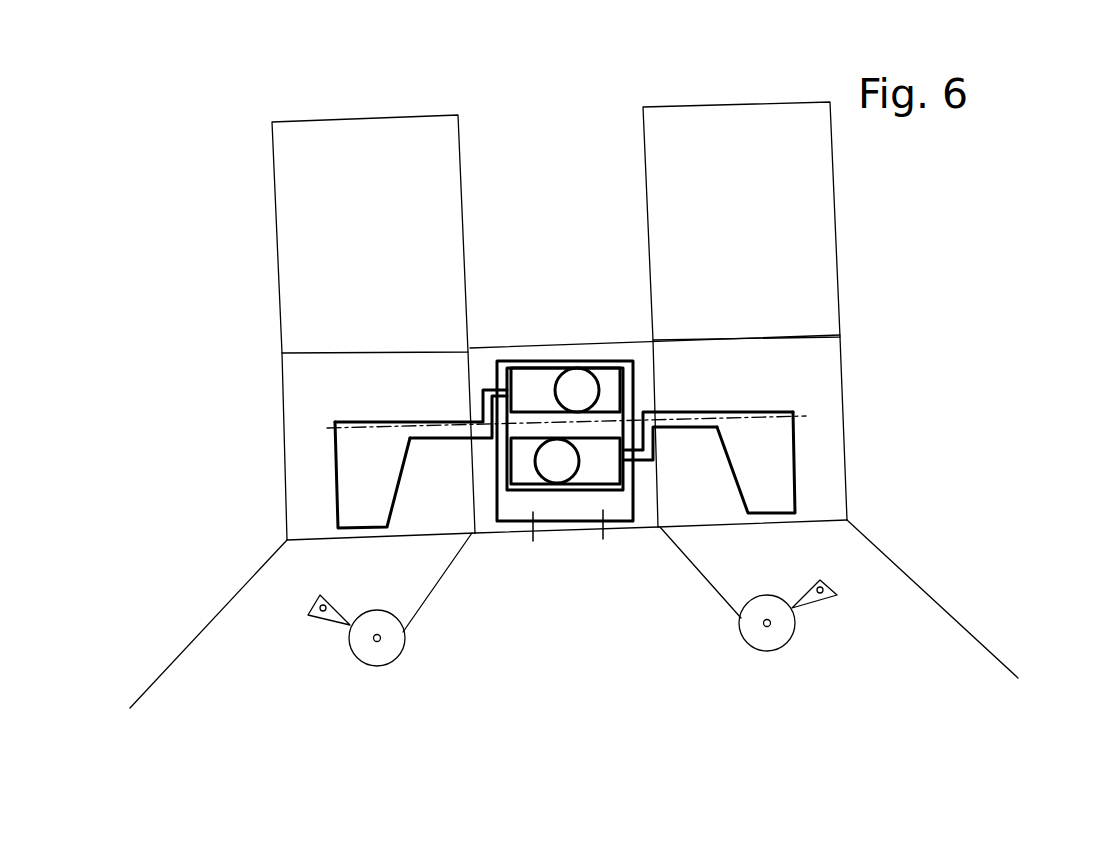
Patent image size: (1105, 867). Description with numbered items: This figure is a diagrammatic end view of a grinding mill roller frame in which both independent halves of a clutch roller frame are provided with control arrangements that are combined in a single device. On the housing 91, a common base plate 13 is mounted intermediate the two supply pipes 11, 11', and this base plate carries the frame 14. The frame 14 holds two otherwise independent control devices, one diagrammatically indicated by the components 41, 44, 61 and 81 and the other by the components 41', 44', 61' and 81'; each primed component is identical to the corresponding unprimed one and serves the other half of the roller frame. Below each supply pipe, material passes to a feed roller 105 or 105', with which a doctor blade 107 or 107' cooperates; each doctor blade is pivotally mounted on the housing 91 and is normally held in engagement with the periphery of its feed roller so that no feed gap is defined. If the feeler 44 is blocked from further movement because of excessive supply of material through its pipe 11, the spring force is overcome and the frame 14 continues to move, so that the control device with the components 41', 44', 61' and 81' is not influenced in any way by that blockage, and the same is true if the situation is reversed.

The inlet pipe 11 is at (702, 317).
The supply pipe 11' is at (318, 327).
The common base plate 13 is at (585, 510).
The frame 14 is at (610, 488).
The control device component 41 is at (698, 364).
The control device component 41' is at (423, 353).
The feeler 44 is at (836, 493).
The feeler 44' is at (286, 509).
The control device component 61 is at (565, 511).
The control device component 61' is at (565, 340).
The control device component 81 is at (528, 512).
The control device component 81' is at (577, 340).
The housing 91 is at (982, 637).
The feed roller 105 is at (727, 589).
The feed roller 105' is at (410, 599).
The doctor blade 107 is at (819, 576).
The doctor blade 107' is at (318, 592).